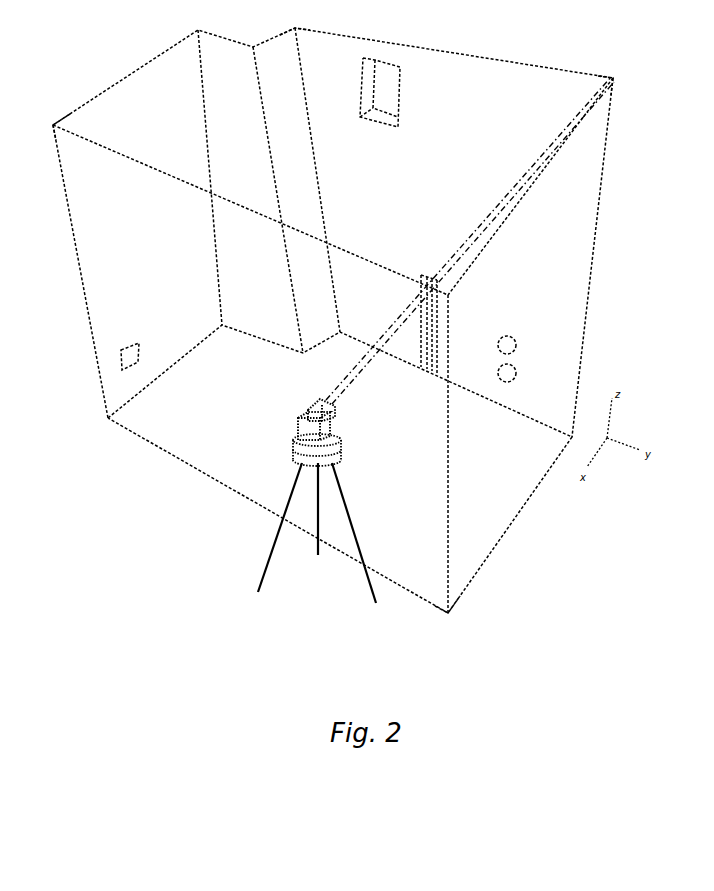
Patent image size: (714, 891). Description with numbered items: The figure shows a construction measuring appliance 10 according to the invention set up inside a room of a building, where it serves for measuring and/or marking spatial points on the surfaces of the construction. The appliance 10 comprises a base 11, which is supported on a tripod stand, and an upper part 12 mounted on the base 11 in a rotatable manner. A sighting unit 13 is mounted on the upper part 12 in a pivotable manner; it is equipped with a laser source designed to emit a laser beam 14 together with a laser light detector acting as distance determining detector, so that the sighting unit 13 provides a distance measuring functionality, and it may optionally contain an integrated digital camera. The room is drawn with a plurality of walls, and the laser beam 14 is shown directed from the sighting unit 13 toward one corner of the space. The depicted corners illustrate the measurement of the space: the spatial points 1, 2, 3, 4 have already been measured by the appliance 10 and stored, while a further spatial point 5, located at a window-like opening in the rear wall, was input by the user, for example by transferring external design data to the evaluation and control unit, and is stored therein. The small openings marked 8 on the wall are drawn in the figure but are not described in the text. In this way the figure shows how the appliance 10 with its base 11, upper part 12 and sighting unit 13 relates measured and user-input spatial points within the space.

The spatial point 1 is at (618, 102).
The spatial point 2 is at (302, 39).
The spatial point 3 is at (58, 125).
The spatial point 4 is at (452, 613).
The spatial point 5 is at (390, 102).
The wall openings 8 is at (514, 352).
The construction measuring appliance 10 is at (306, 487).
The base 11 is at (306, 518).
The upper part 12 is at (283, 426).
The sighting unit 13 is at (336, 412).
The laser beam 14 is at (470, 240).